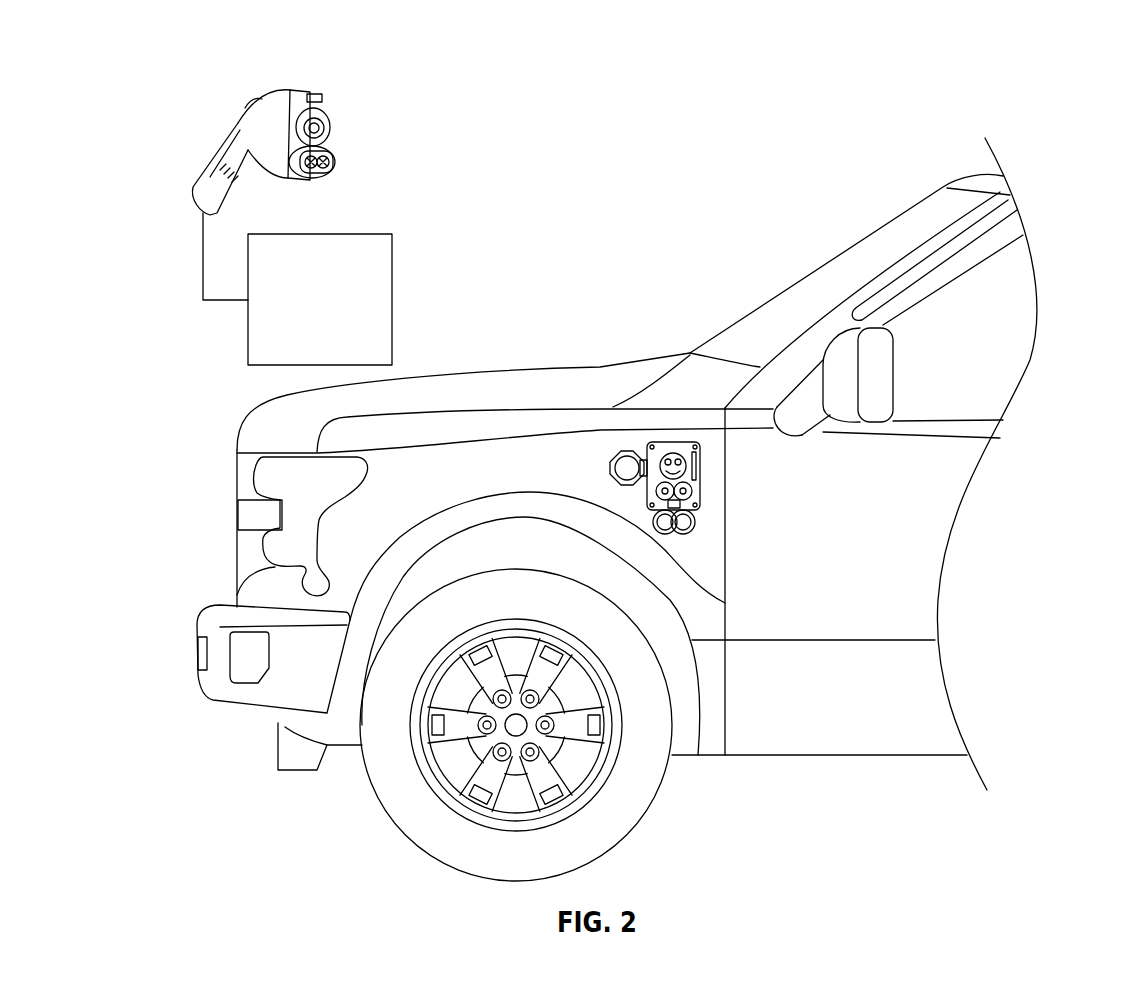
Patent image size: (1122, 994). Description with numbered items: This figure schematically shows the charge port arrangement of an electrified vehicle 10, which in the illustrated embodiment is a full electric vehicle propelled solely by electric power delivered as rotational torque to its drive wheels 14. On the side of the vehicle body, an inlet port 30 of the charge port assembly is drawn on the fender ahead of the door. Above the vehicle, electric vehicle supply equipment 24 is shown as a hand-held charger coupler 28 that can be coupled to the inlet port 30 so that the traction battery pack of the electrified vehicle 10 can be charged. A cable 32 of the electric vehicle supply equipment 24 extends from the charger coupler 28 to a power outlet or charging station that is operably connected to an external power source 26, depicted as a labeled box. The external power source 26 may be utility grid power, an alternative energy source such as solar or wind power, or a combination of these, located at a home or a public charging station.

The electrified vehicle 10 is at (842, 247).
The drive wheel 14 is at (425, 853).
The electric vehicle supply equipment 24 is at (304, 90).
The external power source 26 is at (392, 300).
The charger coupler 28 is at (241, 122).
The inlet port 30 is at (683, 492).
The cable 32 is at (197, 172).